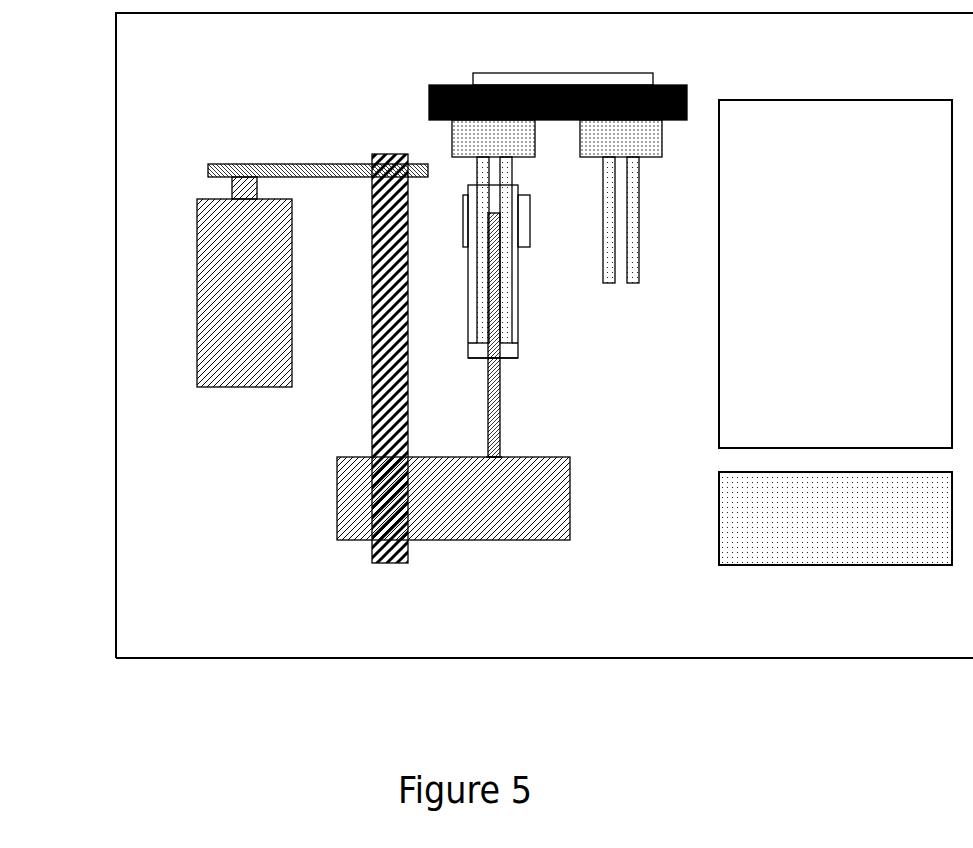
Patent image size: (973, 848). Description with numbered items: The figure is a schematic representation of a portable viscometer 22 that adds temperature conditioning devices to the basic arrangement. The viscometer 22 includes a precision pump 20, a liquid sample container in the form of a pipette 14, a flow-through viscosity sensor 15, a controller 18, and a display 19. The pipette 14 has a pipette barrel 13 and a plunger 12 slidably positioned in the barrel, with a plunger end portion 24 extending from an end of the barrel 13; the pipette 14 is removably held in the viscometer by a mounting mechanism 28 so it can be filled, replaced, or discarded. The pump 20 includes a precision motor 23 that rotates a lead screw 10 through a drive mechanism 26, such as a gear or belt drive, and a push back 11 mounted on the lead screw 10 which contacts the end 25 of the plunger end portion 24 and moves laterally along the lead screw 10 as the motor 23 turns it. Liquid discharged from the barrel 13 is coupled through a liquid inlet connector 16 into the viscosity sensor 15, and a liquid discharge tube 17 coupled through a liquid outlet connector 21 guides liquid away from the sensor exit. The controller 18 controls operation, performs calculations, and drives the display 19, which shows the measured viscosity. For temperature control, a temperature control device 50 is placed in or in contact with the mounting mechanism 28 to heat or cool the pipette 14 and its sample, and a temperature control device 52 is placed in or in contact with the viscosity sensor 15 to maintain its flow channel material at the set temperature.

The lead screw 10 is at (372, 303).
The push back 11 is at (438, 540).
The plunger 12 is at (500, 250).
The pipette barrel 13 is at (508, 297).
The pipette 14 is at (455, 225).
The flow-through viscosity sensor 15 is at (617, 83).
The liquid inlet connector 16 is at (452, 143).
The liquid discharge tube 17 is at (639, 215).
The controller 18 is at (817, 292).
The display 19 is at (907, 567).
The precision pump 20 is at (297, 442).
The liquid outlet connector 21 is at (663, 138).
The viscometer 22 is at (883, 660).
The precision motor 23 is at (275, 388).
The plunger end portion 24 is at (500, 410).
The end of plunger end portion 25 is at (502, 455).
The drive mechanism 26 is at (318, 164).
The mounting mechanism 28 is at (468, 342).
The temperature control device 50 is at (528, 198).
The temperature control device 52 is at (507, 78).